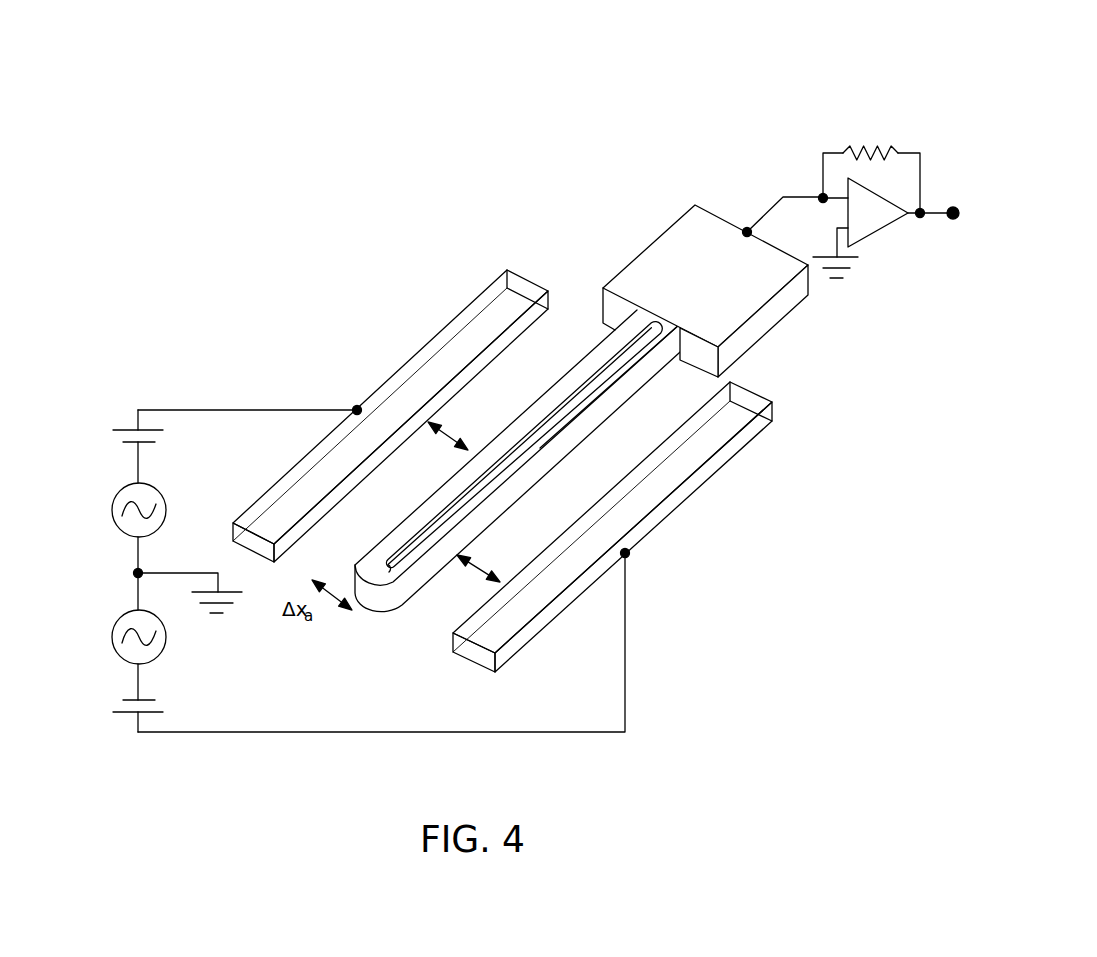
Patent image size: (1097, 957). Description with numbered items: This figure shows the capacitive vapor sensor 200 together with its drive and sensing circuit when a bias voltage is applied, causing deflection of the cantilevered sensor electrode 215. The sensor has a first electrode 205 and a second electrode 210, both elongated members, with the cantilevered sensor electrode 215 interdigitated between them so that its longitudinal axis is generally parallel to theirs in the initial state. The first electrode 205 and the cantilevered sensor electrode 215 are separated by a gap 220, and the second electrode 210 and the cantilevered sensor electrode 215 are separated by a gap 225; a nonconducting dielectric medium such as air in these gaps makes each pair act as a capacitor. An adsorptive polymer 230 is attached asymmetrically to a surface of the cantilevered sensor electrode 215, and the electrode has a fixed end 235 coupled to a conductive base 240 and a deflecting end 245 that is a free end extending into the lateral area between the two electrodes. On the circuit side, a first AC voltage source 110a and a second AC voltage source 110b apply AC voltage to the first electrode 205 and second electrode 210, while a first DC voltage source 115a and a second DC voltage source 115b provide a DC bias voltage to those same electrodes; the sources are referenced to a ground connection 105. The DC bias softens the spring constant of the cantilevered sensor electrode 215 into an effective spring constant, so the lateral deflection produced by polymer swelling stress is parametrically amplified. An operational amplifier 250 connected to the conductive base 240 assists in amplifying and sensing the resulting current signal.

The capacitive vapor sensor 200 is at (495, 142).
The ground connection 105 is at (212, 617).
The first alternating current (AC) voltage source 110a is at (112, 508).
The second AC voltage source 110b is at (112, 634).
The first direct current (DC) voltage source 115a is at (113, 433).
The second DC voltage source 115b is at (113, 703).
The first electrode 205 is at (285, 478).
The second electrode 210 is at (530, 642).
The cantilevered sensor electrode 215 is at (506, 512).
The gap 220 is at (448, 436).
The gap 225 is at (478, 568).
The adsorptive polymer 230 is at (567, 393).
The fixed end 235 is at (662, 353).
The conductive base 240 is at (685, 238).
The deflecting end 245 is at (380, 607).
The operational amplifier 250 is at (845, 90).